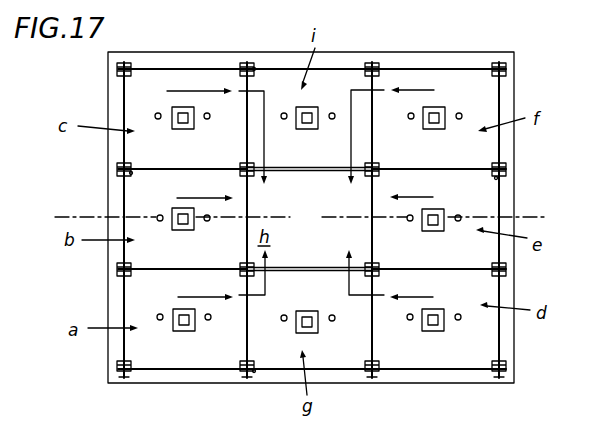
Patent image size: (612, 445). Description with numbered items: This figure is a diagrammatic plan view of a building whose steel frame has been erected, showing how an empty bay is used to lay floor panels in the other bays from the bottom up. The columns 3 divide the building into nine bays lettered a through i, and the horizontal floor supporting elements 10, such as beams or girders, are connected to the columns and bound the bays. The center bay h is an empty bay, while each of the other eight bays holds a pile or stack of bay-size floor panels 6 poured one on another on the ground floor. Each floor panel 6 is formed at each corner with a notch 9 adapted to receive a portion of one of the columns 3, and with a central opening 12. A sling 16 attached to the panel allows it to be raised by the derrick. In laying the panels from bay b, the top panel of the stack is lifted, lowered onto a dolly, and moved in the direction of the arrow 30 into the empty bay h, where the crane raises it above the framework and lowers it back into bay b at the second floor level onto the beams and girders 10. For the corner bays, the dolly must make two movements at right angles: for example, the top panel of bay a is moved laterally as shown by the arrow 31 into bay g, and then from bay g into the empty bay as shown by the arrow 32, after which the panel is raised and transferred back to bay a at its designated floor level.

The columns 3 is at (311, 218).
The floor panels 6 is at (343, 354).
The notch 9 is at (314, 240).
The horizontal floor supporting elements 10 is at (306, 264).
The central opening 12 is at (308, 233).
The sling 16 is at (298, 217).
The arrow 30 is at (215, 197).
The arrow 31 is at (216, 297).
The arrow 32 is at (268, 280).